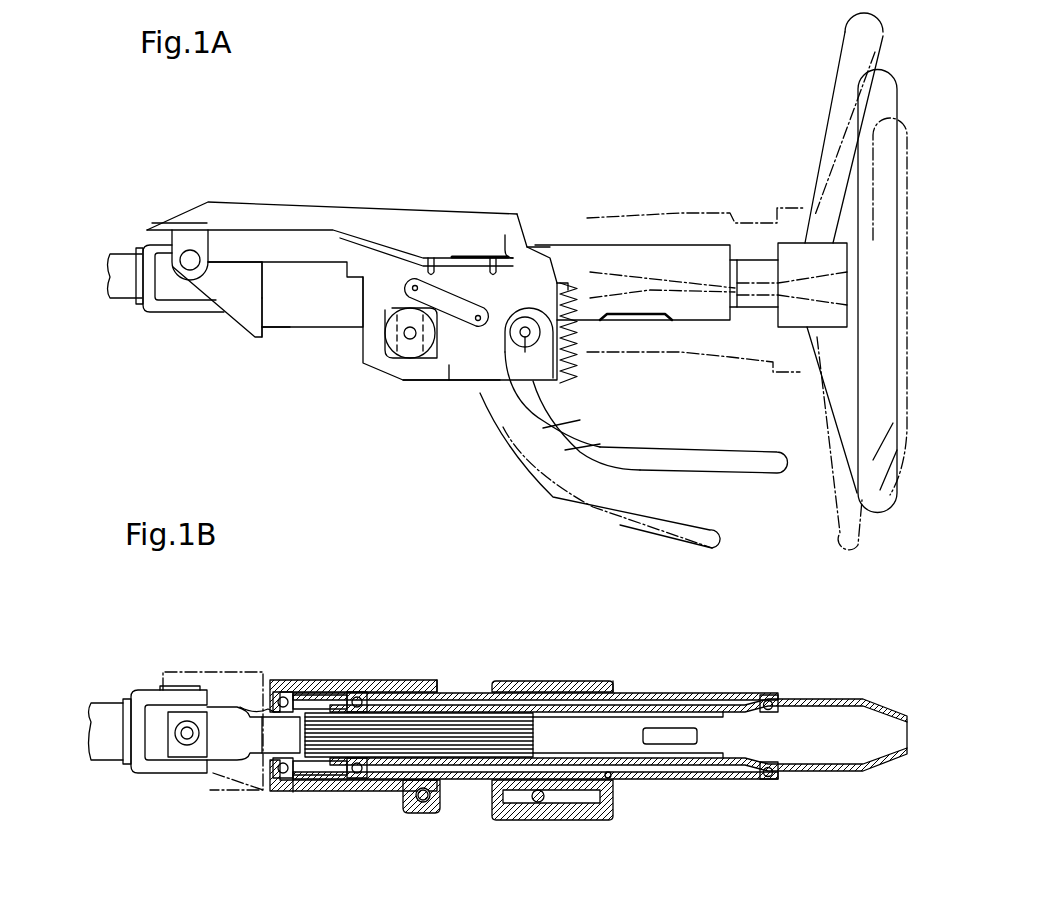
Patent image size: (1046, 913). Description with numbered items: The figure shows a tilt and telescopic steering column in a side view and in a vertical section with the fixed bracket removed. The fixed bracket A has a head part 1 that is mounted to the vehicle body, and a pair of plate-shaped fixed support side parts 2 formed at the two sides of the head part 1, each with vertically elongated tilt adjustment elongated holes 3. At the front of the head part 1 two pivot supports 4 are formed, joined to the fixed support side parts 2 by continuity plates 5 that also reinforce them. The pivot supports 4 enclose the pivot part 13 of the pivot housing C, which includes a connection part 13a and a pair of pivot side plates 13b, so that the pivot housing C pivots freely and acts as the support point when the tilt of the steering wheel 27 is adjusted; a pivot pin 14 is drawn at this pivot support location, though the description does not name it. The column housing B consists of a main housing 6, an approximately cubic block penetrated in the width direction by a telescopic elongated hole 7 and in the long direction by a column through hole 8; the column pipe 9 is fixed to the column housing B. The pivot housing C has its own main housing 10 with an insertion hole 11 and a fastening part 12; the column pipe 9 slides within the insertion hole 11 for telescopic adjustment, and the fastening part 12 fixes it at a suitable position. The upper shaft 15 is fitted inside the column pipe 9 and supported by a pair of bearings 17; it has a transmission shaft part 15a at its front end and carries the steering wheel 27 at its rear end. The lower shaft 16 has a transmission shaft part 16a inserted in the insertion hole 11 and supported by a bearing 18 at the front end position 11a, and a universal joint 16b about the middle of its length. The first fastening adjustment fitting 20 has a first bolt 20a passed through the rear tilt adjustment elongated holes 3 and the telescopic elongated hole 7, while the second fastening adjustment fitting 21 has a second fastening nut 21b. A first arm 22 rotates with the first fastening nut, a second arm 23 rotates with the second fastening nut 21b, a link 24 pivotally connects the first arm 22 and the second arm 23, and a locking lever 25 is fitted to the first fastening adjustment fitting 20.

In FIG. 1A, the head part 1 is at (330, 202).
In FIG. 1A, the fixed support side part 2 is at (439, 383).
In FIG. 1A, the tilt adjustment elongated hole 3 is at (409, 362).
In FIG. 1A, the pivot support 4 is at (181, 240).
In FIG. 1A, the continuity plate 5 is at (330, 245).
In FIG. 1B, the main housing 6 is at (557, 681).
In FIG. 1B, the telescopic elongated hole 7 is at (567, 797).
In FIG. 1B, the column through hole 8 is at (610, 778).
In FIG. 1A, the column pipe 9 is at (570, 245).
In FIG. 1B, the column pipe 9 is at (682, 692).
In FIG. 1A, the main housing 10 is at (323, 330).
In FIG. 1B, the main housing 10 is at (323, 680).
In FIG. 1B, the insertion hole 11 is at (318, 772).
In FIG. 1B, the front end position 11a is at (296, 794).
In FIG. 1B, the fastening part 12 is at (408, 805).
In FIG. 1A, the pivot part 13 is at (241, 316).
In FIG. 1B, the pivot part 13 is at (198, 665).
In FIG. 1A, the connection part 13a is at (267, 298).
In FIG. 1A, the pivot side plate 13b is at (266, 274).
In FIG. 1A, the universal joint 14 is at (200, 255).
In FIG. 1B, the universal joint 14 is at (185, 712).
In FIG. 1A, the upper shaft 15 is at (742, 215).
In FIG. 1B, the upper shaft 15 is at (463, 705).
In FIG. 1B, the transmission shaft part 15a is at (453, 745).
In FIG. 1A, the lower shaft 16 is at (126, 302).
In FIG. 1B, the lower shaft 16 is at (103, 770).
In FIG. 1B, the transmission shaft part 16a is at (487, 748).
In FIG. 1A, the universal joint 16b is at (153, 316).
In FIG. 1B, the universal joint 16b is at (140, 775).
In FIG. 1B, the bearing 17 is at (356, 692).
In FIG. 1B, the bearing 18 is at (280, 778).
In FIG. 1A, the first fastening adjustment fitting 20 is at (560, 390).
In FIG. 1B, the first bolt 20a is at (538, 803).
In FIG. 1A, the second fastening adjustment fitting 21 is at (398, 340).
In FIG. 1B, the second fastening nut 21b is at (425, 814).
In FIG. 1A, the first arm 22 is at (478, 396).
In FIG. 1A, the second arm 23 is at (400, 285).
In FIG. 1A, the link 24 is at (450, 383).
In FIG. 1A, the locking lever 25 is at (705, 476).
In FIG. 1A, the steering wheel 27 is at (843, 42).
In FIG. 1A, the fixed bracket A is at (451, 204).
In FIG. 1A, the column housing B is at (466, 360).
In FIG. 1B, the column housing B is at (590, 674).
In FIG. 1A, the pivot housing C is at (291, 330).
In FIG. 1B, the pivot housing C is at (374, 673).